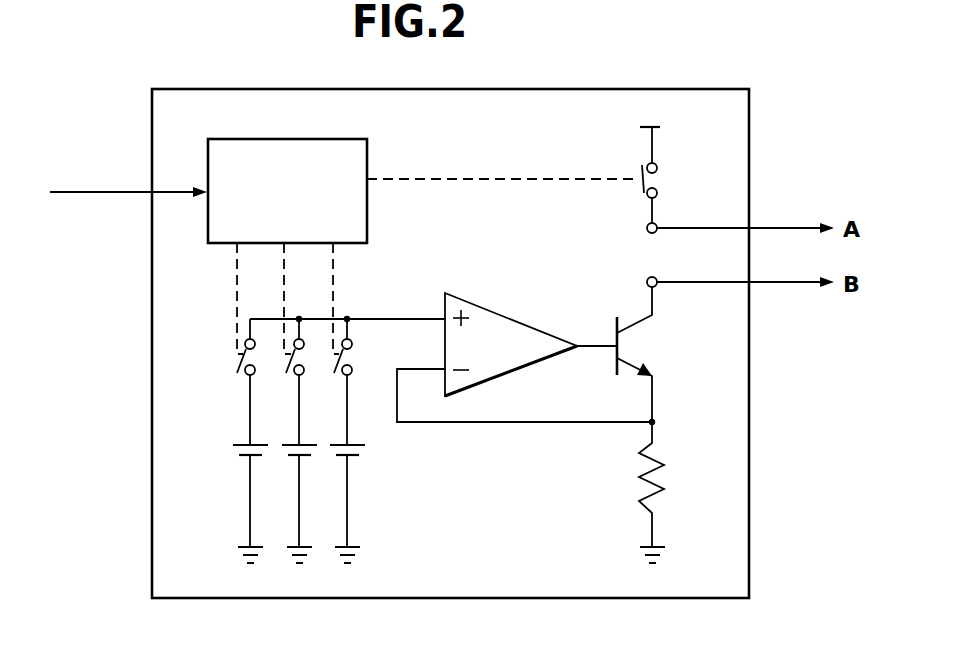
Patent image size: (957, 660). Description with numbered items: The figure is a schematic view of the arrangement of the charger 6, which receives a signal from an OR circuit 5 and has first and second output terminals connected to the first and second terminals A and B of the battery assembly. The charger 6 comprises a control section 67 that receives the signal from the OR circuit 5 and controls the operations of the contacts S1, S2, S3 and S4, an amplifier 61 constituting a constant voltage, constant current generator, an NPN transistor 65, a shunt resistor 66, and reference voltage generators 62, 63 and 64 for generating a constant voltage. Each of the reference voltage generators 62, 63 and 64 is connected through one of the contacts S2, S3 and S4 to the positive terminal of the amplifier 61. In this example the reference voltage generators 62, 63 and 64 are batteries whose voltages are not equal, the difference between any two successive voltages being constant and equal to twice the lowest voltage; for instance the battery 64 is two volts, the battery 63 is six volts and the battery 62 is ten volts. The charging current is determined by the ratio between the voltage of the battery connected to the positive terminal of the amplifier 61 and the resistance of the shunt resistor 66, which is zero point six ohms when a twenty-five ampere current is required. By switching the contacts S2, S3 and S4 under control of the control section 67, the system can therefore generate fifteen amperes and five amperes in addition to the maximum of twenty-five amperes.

The OR circuit 5 is at (116, 193).
The charger 6 is at (571, 98).
The control section 67 is at (368, 153).
The contact S1 is at (636, 188).
The contact S2 is at (355, 360).
The contact S3 is at (307, 360).
The contact S4 is at (258, 360).
The amplifier 61 is at (523, 332).
The reference voltage generator 62 is at (361, 455).
The reference voltage generator 63 is at (311, 455).
The reference voltage generator 64 is at (239, 452).
The NPN transistor 65 is at (645, 334).
The shunt resistor 66 is at (642, 470).